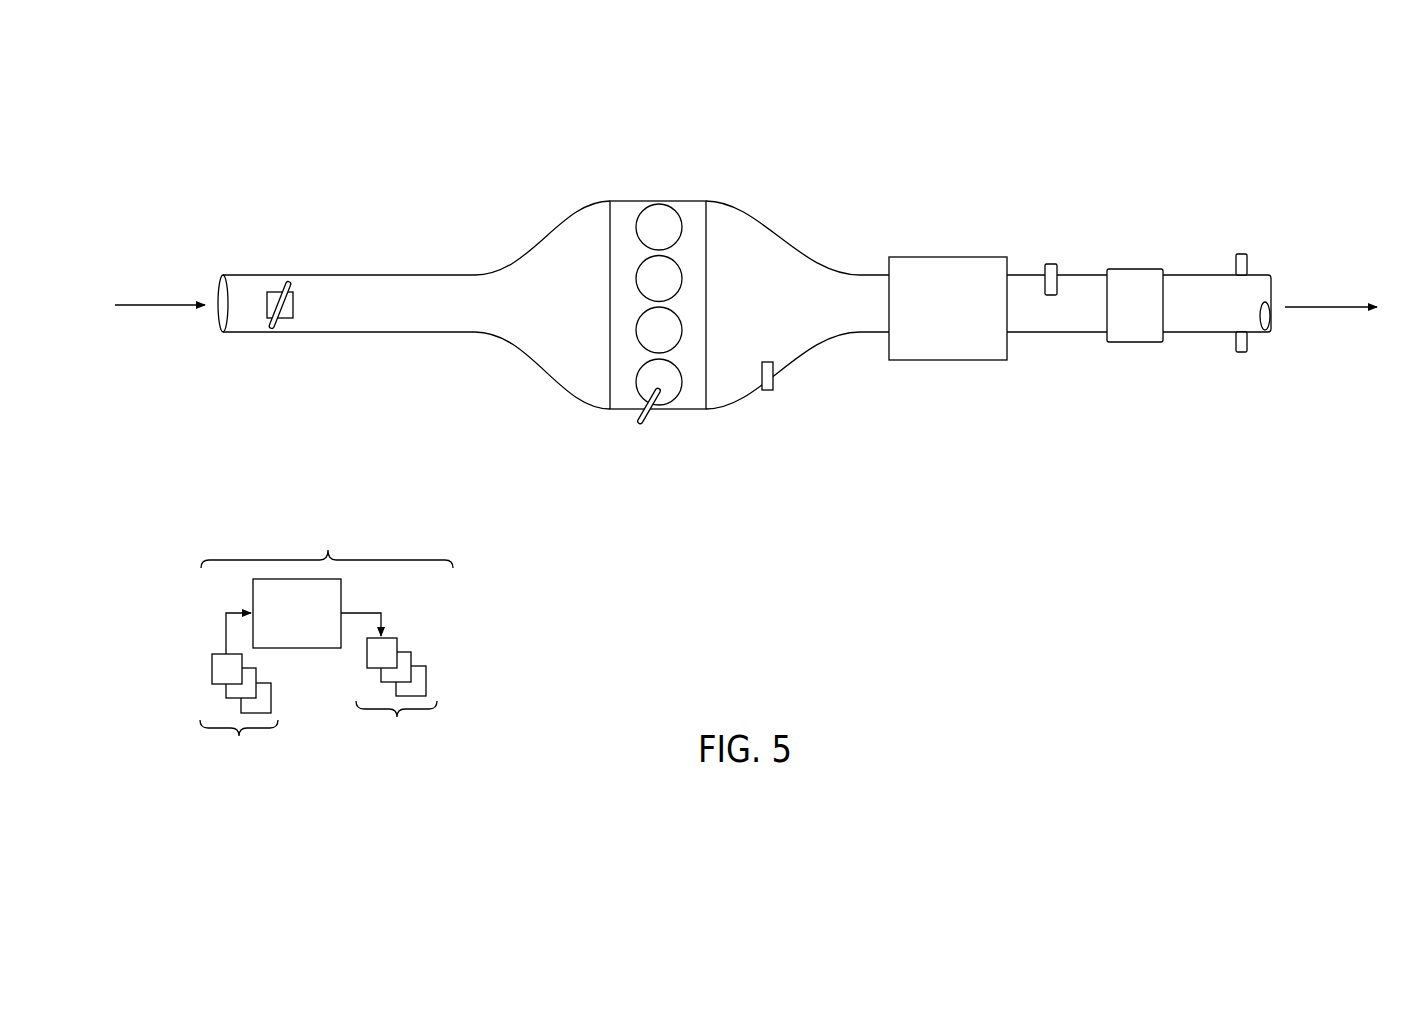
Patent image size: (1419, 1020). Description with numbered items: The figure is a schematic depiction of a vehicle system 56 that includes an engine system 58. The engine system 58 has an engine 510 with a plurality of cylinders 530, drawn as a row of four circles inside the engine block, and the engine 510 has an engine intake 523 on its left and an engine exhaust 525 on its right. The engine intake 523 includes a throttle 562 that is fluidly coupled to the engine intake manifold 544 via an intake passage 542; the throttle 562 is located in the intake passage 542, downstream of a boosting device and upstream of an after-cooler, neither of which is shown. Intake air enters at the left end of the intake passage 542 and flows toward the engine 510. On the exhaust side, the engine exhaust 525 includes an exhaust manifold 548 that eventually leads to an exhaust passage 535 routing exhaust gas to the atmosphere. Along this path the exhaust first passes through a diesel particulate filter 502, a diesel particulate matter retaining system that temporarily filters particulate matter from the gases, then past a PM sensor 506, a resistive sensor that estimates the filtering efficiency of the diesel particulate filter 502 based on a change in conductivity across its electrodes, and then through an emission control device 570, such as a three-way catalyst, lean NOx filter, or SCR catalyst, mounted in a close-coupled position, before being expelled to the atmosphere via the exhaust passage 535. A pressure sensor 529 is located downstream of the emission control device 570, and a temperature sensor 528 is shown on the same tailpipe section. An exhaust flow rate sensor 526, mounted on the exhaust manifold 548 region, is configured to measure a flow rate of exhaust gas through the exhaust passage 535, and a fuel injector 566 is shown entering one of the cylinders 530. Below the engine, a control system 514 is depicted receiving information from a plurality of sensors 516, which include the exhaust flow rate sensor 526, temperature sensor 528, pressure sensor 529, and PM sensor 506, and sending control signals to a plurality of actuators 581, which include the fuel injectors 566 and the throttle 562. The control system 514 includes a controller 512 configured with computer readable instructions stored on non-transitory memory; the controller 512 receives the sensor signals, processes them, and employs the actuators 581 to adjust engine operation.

The vehicle system 56 is at (172, 139).
The engine system 58 is at (697, 177).
The engine intake 523 is at (410, 268).
The intake passage 542 is at (328, 334).
The throttle 562 is at (294, 314).
The engine intake manifold 544 is at (570, 316).
The engine 510 is at (707, 285).
The cylinders 530 is at (682, 220).
The fuel injectors 566 is at (650, 413).
The exhaust manifold 548 is at (790, 316).
The exhaust flow rate sensor 526 is at (774, 373).
The engine exhaust 525 is at (808, 251).
The diesel particulate filter 502 is at (986, 345).
The PM sensor 506 is at (1046, 265).
The emission control device 570 is at (1120, 316).
The exhaust passage 535 is at (1202, 274).
The pressure sensor 529 is at (1236, 265).
The temperature sensor 528 is at (1236, 345).
The control system 514 is at (326, 639).
The controller 512 is at (297, 613).
The sensors 516 is at (239, 693).
The actuators 581 is at (389, 685).